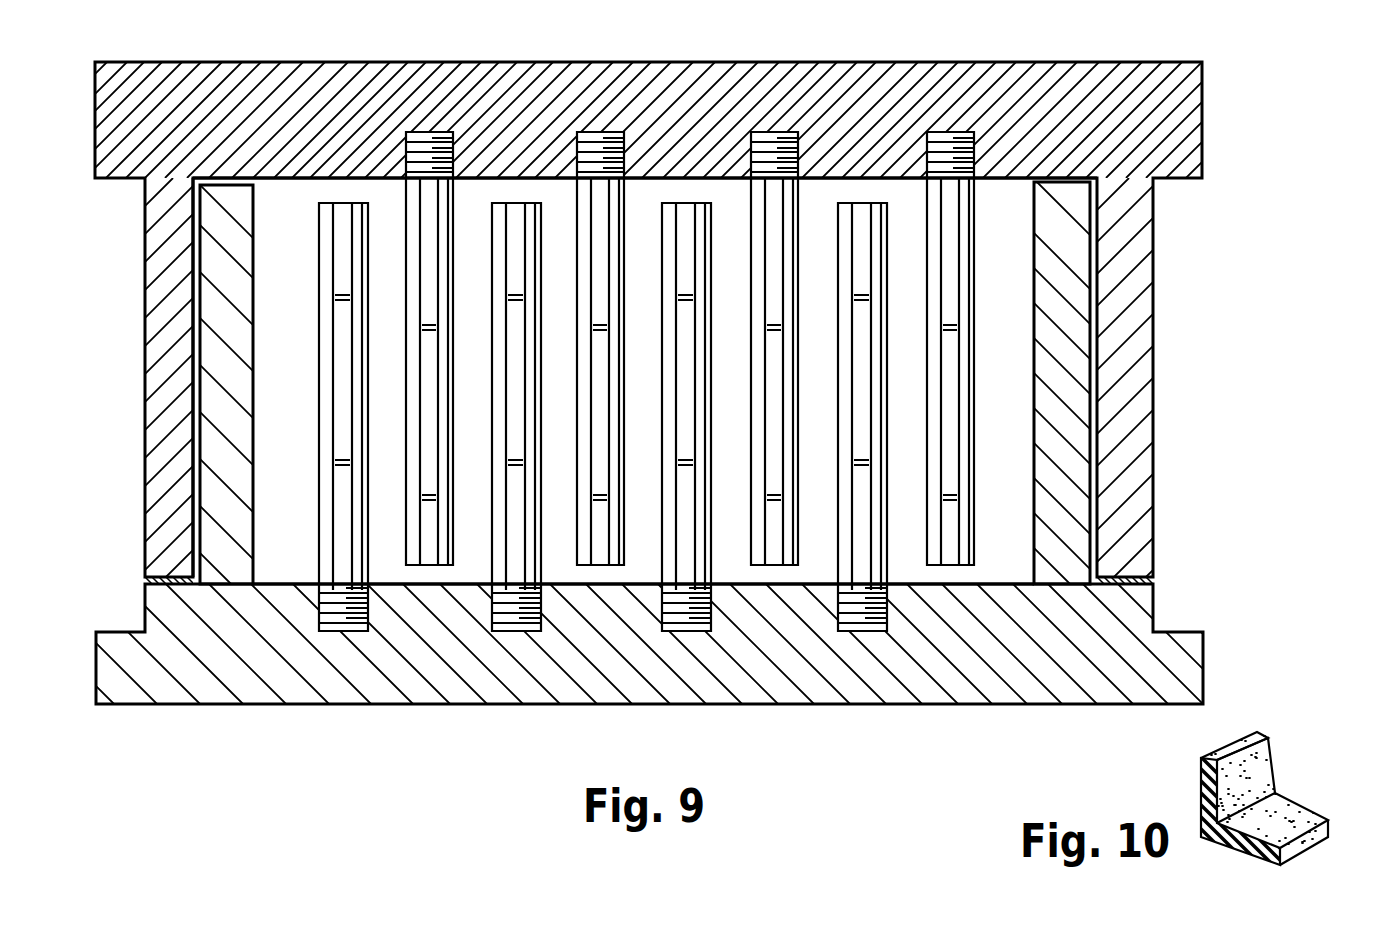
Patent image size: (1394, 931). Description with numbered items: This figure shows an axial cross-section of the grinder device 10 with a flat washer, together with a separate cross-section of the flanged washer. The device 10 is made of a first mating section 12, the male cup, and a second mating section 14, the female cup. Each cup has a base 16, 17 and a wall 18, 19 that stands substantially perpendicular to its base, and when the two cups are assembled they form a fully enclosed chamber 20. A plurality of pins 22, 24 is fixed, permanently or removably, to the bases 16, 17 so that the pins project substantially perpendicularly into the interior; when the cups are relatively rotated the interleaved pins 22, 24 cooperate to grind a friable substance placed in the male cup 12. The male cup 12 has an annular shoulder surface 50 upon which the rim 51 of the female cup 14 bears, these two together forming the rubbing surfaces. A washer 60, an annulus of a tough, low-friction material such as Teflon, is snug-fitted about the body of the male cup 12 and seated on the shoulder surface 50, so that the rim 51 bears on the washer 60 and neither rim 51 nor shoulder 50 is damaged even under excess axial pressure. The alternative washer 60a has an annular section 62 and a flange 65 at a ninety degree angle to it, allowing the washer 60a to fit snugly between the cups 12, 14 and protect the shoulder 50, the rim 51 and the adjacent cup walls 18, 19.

In FIG. 9, the device 10 is at (1251, 169).
In FIG. 9, the first mating section 12 is at (1062, 707).
In FIG. 9, the second mating section 14 is at (1010, 42).
In FIG. 9, the base 16 is at (685, 662).
In FIG. 9, the base 17 is at (697, 103).
In FIG. 9, the wall 18 is at (230, 352).
In FIG. 9, the wall 19 is at (1137, 290).
In FIG. 9, the chamber 20 is at (1013, 393).
In FIG. 9, the pins 22 is at (325, 277).
In FIG. 9, the pins 24 is at (968, 247).
In FIG. 9, the annular shoulder surface 50 is at (163, 590).
In FIG. 9, the rim 51 is at (163, 568).
In FIG. 9, the washer 60 is at (147, 580).
In FIG. 10, the washer 60a is at (1337, 742).
In FIG. 10, the annular section 62 is at (1322, 791).
In FIG. 10, the flange 65 is at (1297, 710).